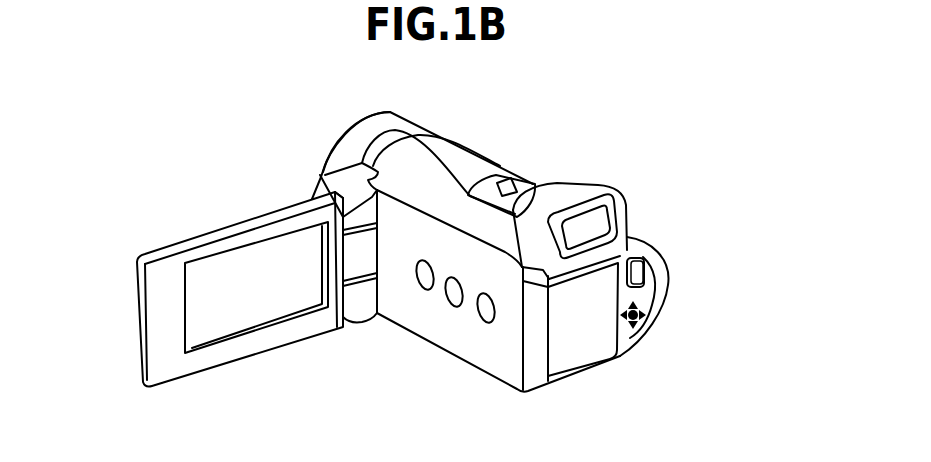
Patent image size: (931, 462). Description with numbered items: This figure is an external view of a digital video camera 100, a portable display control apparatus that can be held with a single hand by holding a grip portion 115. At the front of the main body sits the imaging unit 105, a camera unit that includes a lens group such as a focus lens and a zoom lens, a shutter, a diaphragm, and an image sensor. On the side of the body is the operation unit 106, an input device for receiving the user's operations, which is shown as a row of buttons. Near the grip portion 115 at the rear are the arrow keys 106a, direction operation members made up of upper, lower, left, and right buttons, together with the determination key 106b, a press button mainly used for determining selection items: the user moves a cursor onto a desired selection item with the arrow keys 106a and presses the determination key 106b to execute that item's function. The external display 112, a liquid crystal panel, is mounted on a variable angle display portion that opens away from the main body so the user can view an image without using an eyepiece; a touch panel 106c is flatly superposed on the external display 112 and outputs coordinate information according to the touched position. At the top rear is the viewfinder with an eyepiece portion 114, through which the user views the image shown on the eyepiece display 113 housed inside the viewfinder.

The digital video camera 100 is at (580, 362).
The imaging unit 105 is at (350, 124).
The operation unit 106 is at (425, 283).
The arrow keys 106a is at (648, 303).
The determination key 106b is at (645, 325).
The touch panel 106c is at (243, 265).
The external display 112 is at (240, 266).
The eyepiece display 113 is at (592, 222).
The eyepiece portion 114 is at (637, 220).
The grip portion 115 is at (660, 270).